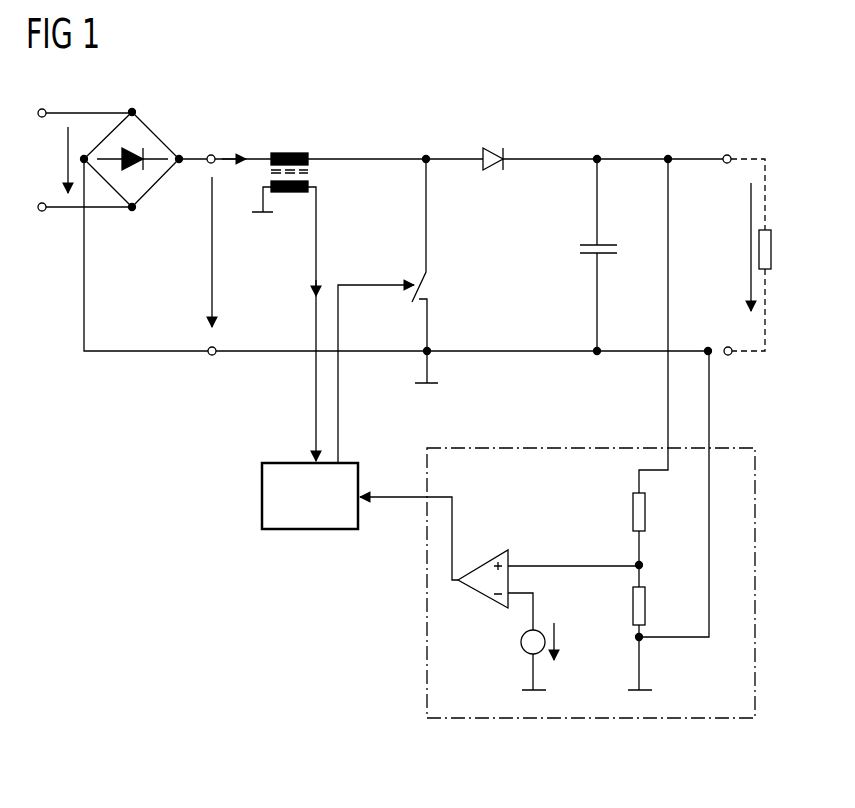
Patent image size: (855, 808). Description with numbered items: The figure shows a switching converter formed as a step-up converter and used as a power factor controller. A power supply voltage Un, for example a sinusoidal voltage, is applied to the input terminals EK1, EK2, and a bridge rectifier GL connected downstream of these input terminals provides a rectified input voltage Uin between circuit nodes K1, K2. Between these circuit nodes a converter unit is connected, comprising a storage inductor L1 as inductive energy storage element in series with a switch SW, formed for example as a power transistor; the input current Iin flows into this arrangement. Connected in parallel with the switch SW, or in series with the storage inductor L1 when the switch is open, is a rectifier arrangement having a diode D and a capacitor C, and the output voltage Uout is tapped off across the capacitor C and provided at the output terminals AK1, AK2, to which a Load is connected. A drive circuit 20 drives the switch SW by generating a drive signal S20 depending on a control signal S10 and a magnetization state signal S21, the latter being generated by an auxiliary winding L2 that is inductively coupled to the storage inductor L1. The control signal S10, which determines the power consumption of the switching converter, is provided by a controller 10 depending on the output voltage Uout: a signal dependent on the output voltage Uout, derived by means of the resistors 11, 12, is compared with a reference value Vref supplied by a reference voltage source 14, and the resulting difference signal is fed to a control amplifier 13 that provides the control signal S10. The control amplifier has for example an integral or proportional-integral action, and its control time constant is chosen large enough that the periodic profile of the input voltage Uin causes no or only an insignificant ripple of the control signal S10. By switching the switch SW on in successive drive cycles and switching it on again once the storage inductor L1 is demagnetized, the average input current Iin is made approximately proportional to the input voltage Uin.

The controller 10 is at (582, 720).
The resistor 11 is at (646, 512).
The resistor 12 is at (646, 598).
The control amplifier 13 is at (487, 560).
The reference voltage source 14 is at (522, 640).
The drive circuit 20 is at (317, 530).
The bridge rectifier GL is at (161, 185).
The storage inductor L1 is at (290, 152).
The auxiliary winding L2 is at (296, 194).
The switch SW is at (430, 283).
The diode D is at (490, 148).
The capacitor C is at (578, 248).
The circuit node K1 is at (209, 154).
The circuit node K2 is at (212, 356).
The input terminal EK1 is at (79, 95).
The input terminal EK2 is at (79, 224).
The output terminal AK1 is at (729, 154).
The output terminal AK2 is at (729, 356).
The load Load is at (789, 249).
The power supply voltage Un is at (52, 160).
The input voltage Uin is at (230, 252).
The output voltage Uout is at (724, 247).
The input current Iin is at (235, 143).
The reference value Vref is at (556, 624).
The control signal S10 is at (409, 523).
The drive signal S20 is at (376, 359).
The auxiliary winding signal S21 is at (293, 370).